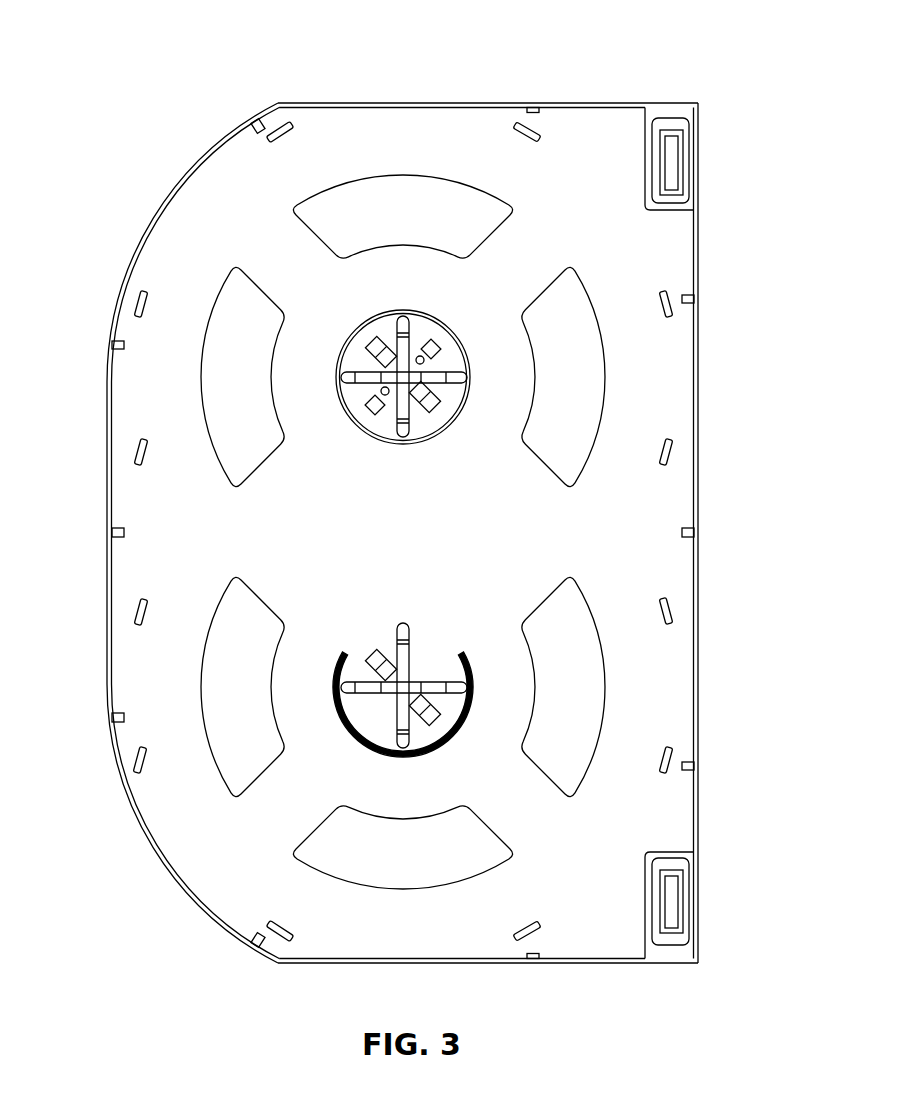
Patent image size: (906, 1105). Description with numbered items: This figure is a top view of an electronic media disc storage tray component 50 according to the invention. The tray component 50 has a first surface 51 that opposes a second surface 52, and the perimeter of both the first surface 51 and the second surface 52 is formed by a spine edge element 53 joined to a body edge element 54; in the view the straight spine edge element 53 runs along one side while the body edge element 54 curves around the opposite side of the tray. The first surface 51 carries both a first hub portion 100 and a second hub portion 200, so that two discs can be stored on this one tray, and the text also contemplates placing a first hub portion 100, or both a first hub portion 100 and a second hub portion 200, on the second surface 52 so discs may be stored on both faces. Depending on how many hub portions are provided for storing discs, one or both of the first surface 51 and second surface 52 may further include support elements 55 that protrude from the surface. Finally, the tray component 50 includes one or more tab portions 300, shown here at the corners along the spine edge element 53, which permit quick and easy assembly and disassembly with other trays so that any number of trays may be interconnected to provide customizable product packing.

The tray component 50 is at (128, 157).
The first surface 51 is at (178, 548).
The second surface 52 is at (92, 522).
The spine edge element 53 is at (700, 367).
The body edge element 54 is at (108, 762).
The support element 55 is at (670, 610).
The first hub portion 100 is at (387, 330).
The second hub portion 200 is at (373, 723).
The tab portion 300 is at (682, 123).